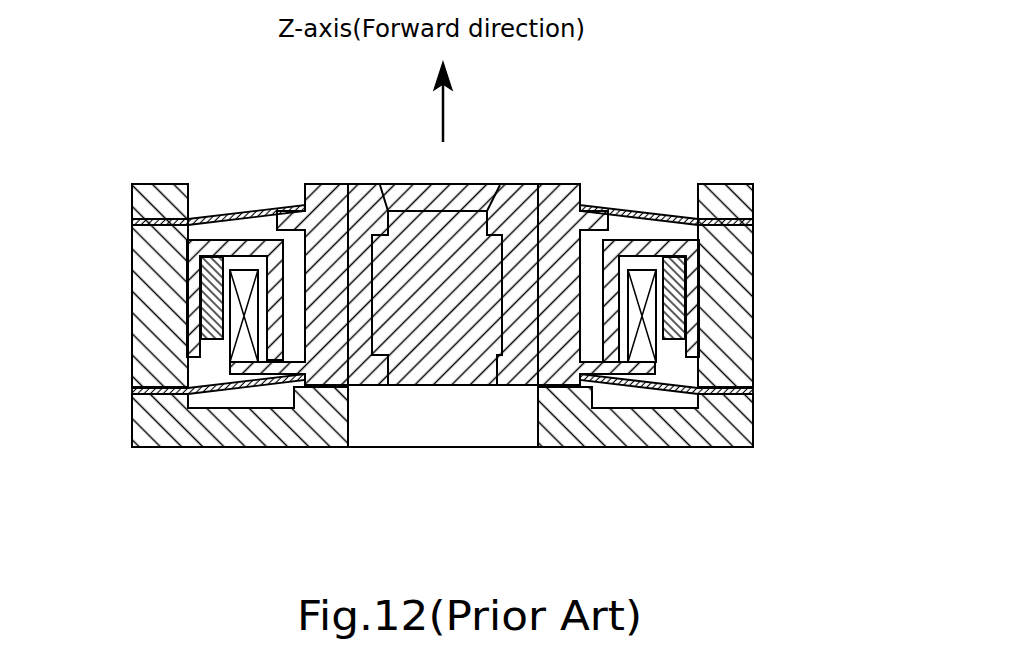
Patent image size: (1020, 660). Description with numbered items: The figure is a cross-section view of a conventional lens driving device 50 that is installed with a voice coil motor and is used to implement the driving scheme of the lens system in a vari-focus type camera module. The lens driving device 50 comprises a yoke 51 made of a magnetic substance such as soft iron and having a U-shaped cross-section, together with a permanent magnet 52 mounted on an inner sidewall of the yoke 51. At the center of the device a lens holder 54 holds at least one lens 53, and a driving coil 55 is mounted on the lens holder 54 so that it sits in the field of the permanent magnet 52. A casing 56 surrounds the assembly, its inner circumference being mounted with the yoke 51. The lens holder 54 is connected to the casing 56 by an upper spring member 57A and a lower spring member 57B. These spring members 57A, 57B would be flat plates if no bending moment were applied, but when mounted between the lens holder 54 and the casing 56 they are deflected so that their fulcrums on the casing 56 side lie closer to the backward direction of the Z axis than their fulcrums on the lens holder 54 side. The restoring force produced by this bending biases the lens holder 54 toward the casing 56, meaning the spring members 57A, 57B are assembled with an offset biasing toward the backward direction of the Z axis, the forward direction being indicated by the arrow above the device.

The lens driving device 50 is at (520, 145).
The yoke 51 is at (187, 250).
The permanent magnet 52 is at (200, 295).
The lens 53 is at (407, 185).
The lens holder 54 is at (557, 185).
The driving coil 55 is at (640, 298).
The casing 56 is at (133, 413).
The upper spring member 57A is at (198, 214).
The lower spring member 57B is at (205, 374).